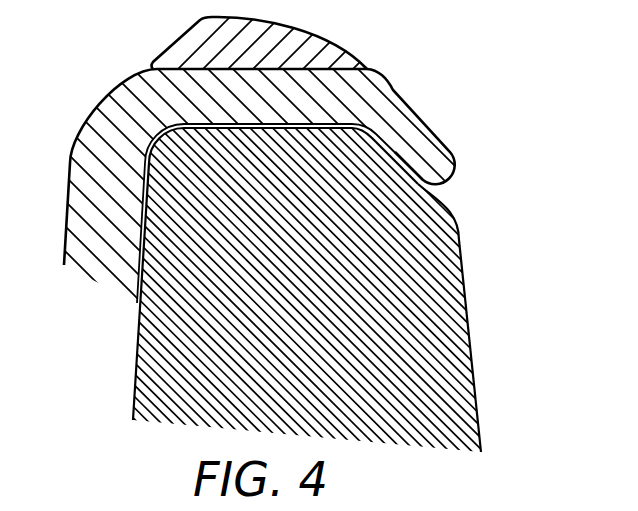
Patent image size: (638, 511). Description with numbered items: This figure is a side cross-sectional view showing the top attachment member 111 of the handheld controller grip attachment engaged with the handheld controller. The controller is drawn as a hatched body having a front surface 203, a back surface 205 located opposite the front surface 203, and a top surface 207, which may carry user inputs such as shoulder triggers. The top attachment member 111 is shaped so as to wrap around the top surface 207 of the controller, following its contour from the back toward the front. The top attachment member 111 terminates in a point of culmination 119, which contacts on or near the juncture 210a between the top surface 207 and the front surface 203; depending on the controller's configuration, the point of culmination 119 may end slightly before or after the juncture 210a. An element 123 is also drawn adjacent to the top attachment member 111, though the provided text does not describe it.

The top attachment member 111 is at (95, 110).
The point of culmination 119 is at (457, 158).
The cap 123 is at (178, 38).
The front surface 203 is at (466, 307).
The back surface 205 is at (137, 337).
The top surface 207 is at (272, 130).
The juncture 210a is at (420, 186).